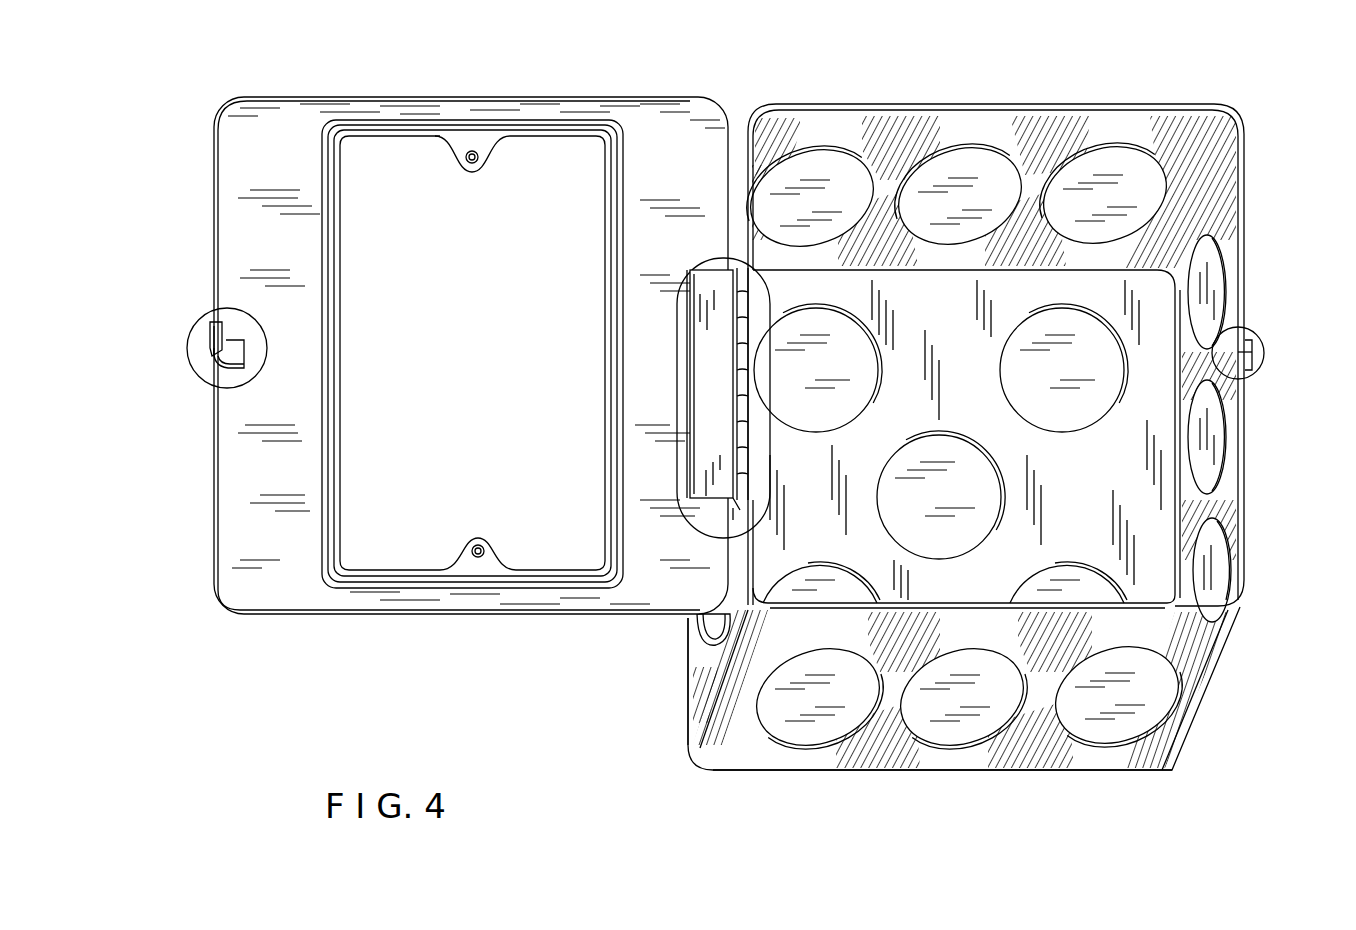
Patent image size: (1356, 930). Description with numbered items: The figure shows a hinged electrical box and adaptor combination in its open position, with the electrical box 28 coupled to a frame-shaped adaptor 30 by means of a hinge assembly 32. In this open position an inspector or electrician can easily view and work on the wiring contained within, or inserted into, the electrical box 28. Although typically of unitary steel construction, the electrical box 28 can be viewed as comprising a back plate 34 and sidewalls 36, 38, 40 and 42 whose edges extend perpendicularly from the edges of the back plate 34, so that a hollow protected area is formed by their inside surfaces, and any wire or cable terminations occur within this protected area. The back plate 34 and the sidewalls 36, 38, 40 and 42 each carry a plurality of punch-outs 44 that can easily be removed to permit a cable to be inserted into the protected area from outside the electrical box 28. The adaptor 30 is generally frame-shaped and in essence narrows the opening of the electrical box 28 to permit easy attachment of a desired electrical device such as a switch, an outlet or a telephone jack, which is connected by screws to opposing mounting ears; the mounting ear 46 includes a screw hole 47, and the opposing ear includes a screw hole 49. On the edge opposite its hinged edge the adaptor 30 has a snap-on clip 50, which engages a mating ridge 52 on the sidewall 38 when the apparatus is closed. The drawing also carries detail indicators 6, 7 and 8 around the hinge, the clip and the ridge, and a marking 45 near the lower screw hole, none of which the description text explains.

The adaptor 30 is at (288, 120).
The hinge assembly 32 is at (707, 275).
The hinge detail area 6 is at (680, 382).
The latch detail area 7 is at (200, 378).
The tab detail area 8 is at (1258, 375).
The sidewall 42 is at (1092, 124).
The punch-outs 44 is at (1138, 185).
The back plate 34 is at (1100, 440).
The sidewall 38 is at (1220, 522).
The sidewall 36 is at (1040, 735).
The electrical box 28 is at (994, 772).
The sidewall 40 is at (690, 655).
The mounting ear 46 is at (492, 165).
The screw hole 47 is at (462, 160).
The screw hole 45 is at (496, 562).
The screw hole 49 is at (475, 546).
The snap-on clip 50 is at (210, 328).
The mating ridge 52 is at (1252, 362).